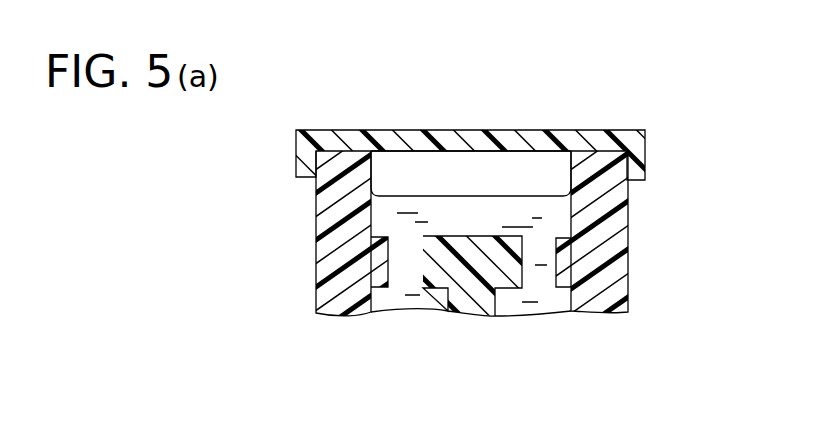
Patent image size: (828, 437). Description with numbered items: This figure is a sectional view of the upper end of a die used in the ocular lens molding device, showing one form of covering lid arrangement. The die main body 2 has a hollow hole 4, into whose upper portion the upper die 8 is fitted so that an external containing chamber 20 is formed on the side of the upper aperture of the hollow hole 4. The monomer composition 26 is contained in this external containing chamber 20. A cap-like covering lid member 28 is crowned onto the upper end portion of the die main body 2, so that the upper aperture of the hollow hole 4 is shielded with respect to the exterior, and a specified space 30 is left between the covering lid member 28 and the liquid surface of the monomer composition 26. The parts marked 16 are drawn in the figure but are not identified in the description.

The die main body 2 is at (598, 255).
The hollow hole 4 is at (400, 176).
The upper die 8 is at (473, 290).
The protrusions 16 is at (407, 274).
The external containing chamber 20 is at (438, 203).
The monomer composition 26 is at (475, 217).
The covering lid member 28 is at (585, 142).
The space 30 is at (485, 176).